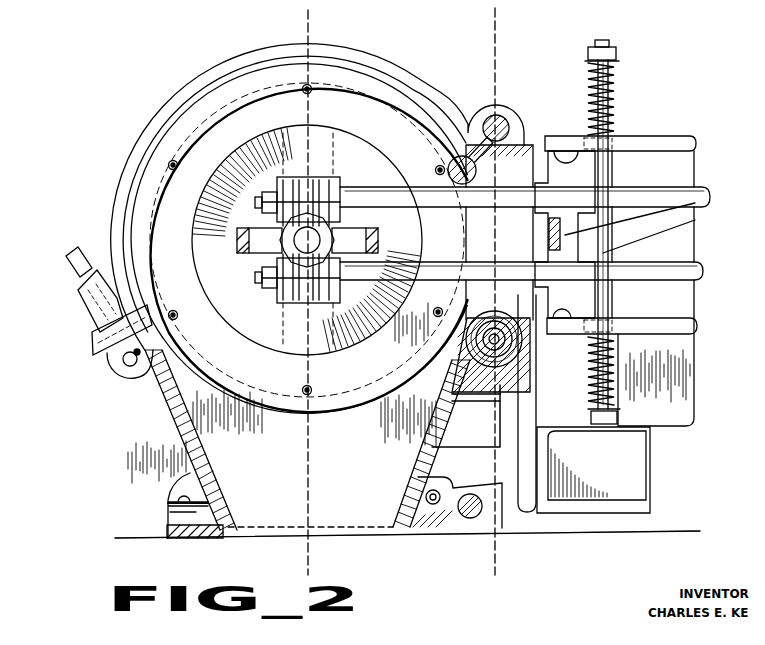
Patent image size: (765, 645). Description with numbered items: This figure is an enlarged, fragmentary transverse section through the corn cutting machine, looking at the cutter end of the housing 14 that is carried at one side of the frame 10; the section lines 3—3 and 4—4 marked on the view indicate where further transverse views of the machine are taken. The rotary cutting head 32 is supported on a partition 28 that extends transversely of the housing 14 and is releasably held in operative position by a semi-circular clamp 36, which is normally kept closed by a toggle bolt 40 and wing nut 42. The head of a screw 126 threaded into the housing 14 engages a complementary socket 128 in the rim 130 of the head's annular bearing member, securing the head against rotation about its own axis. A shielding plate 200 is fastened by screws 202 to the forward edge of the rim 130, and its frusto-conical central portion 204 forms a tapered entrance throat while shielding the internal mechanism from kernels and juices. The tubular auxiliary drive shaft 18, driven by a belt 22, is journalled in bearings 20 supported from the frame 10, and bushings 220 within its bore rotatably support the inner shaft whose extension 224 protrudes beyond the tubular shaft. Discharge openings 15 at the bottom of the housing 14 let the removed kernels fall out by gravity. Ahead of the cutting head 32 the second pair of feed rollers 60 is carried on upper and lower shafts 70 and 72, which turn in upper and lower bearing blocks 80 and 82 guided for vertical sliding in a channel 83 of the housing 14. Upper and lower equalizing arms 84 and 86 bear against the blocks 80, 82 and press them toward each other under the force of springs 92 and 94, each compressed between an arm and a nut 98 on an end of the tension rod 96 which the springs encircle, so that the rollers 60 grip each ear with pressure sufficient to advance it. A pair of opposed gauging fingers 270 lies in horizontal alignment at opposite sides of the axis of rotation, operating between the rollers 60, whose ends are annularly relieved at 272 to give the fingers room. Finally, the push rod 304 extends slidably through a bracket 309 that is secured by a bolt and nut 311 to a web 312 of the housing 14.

The section line 3- 3 is at (300, 553).
The section line 4- 4 is at (512, 550).
The frame 10 is at (172, 436).
The housing 14 is at (157, 148).
The discharge opening 15 is at (349, 537).
The auxiliary drive shaft 18 is at (508, 357).
The bearings 20 is at (520, 341).
The belt 22 is at (667, 218).
The partition 28 is at (255, 475).
The rotary cutting head 32 is at (168, 182).
The semi-circular clamp 36 is at (150, 118).
The toggle bolt 40 is at (96, 340).
The wing nut 42 is at (72, 264).
The second pair of feed rollers 60 is at (307, 315).
The upper shaft 70 is at (452, 197).
The lower shaft 72 is at (452, 271).
The upper bearing block 80 is at (581, 198).
The lower bearing block 82 is at (581, 281).
The channel 83 is at (540, 247).
The upper equalizing arm 84 is at (668, 141).
The lower equalizing arm 86 is at (699, 322).
The spring 92 is at (616, 86).
The spring 94 is at (613, 398).
The tension rod 96 is at (609, 165).
The nut 98 is at (618, 56).
The screw 126 is at (484, 167).
The socket 128 is at (447, 158).
The rim 130 is at (449, 178).
The shielding plate 200 is at (163, 218).
The screws 202 is at (303, 388).
The frusto-conical central portion 204 is at (266, 137).
The bushings 220 is at (487, 336).
The extension 224 is at (493, 341).
The gauging fingers 270 is at (358, 236).
The annularly relieved ends 272 is at (270, 298).
The push rod 304 is at (472, 496).
The bracket 309 is at (457, 487).
The nut 311 is at (436, 505).
The web 312 is at (421, 515).